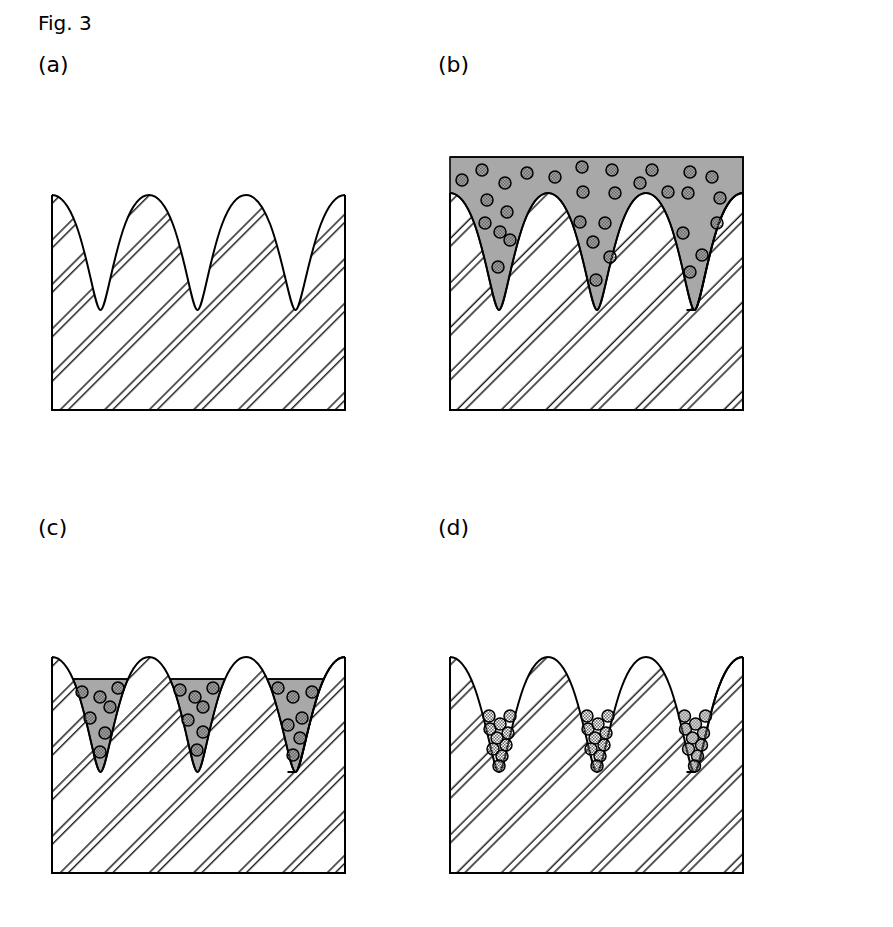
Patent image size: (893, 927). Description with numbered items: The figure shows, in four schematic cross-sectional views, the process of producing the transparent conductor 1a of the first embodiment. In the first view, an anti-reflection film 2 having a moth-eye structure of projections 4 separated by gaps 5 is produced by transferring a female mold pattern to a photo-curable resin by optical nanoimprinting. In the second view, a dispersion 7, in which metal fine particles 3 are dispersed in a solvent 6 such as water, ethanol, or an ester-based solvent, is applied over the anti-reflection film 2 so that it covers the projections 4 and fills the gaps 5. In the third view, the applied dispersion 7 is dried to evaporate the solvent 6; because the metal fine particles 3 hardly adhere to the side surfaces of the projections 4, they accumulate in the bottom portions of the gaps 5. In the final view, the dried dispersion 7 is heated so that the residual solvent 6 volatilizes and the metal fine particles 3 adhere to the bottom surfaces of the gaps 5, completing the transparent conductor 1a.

The transparent conductor 1a is at (479, 625).
The anti-reflection film 2 is at (768, 817).
The metal fine particles 3 is at (597, 715).
The projections 4 is at (653, 670).
The gaps 5 is at (697, 695).
The solvent 6 is at (202, 683).
The dispersion 7 is at (227, 603).